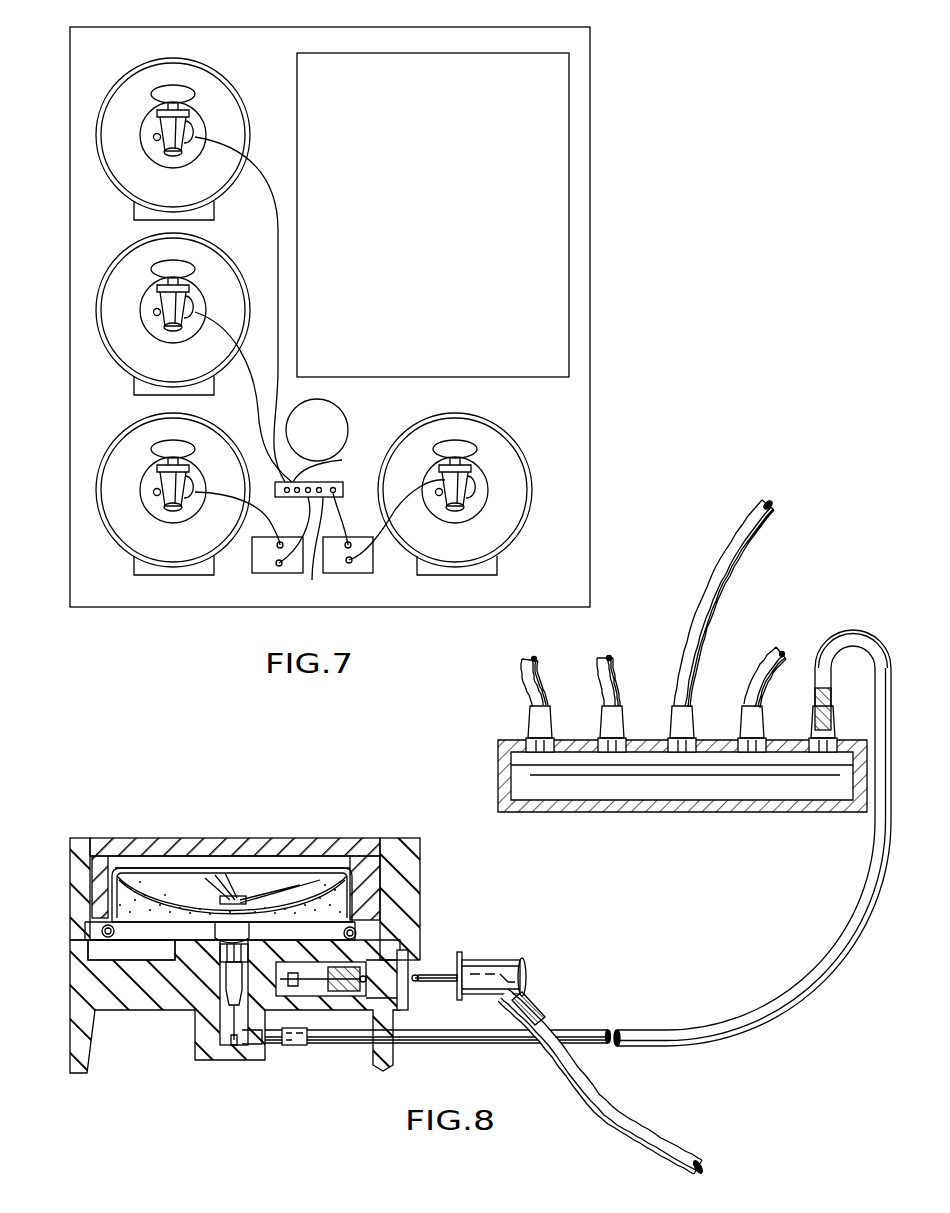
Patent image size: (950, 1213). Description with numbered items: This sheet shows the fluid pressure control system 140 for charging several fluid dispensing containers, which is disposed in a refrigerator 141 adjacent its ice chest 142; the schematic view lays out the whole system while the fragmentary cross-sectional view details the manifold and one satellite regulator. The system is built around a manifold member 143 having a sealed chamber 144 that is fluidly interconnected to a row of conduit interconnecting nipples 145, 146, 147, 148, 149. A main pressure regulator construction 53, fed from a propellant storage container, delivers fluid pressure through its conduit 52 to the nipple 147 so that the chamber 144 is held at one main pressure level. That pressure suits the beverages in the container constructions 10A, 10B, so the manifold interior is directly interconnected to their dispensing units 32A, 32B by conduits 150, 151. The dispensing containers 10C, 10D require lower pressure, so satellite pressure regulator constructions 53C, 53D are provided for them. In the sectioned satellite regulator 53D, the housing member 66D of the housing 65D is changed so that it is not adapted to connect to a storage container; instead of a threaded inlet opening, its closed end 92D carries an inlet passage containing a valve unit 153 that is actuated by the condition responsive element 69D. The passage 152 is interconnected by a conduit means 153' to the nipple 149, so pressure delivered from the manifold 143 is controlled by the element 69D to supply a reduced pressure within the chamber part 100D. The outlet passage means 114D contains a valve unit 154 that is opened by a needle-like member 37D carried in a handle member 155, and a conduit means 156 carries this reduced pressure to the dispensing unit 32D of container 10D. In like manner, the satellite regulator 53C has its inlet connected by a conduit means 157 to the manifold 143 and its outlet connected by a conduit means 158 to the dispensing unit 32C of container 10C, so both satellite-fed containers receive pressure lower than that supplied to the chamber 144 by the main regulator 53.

In FIG. 7, the container construction 10A is at (154, 128).
In FIG. 7, the container construction 10B is at (134, 314).
In FIG. 7, the dispensing container 10C is at (136, 527).
In FIG. 7, the dispensing container 10D is at (481, 506).
In FIG. 7, the dispensing unit 32A is at (141, 129).
In FIG. 7, the dispensing unit 32B is at (139, 318).
In FIG. 7, the dispensing unit 32C is at (141, 498).
In FIG. 7, the dispensing unit 32D is at (483, 475).
In FIG. 8, the needle-like member 37D is at (435, 973).
In FIG. 7, the conduit 52 is at (343, 460).
In FIG. 8, the conduit 52 is at (736, 566).
In FIG. 7, the main pressure regulator construction 53 is at (329, 422).
In FIG. 7, the satellite pressure regulator construction 53C is at (266, 579).
In FIG. 7, the satellite pressure regulator construction 53D is at (369, 577).
In FIG. 8, the satellite pressure regulator construction 53D is at (348, 830).
In FIG. 8, the housing 65D is at (409, 884).
In FIG. 8, the housing member 66D is at (410, 905).
In FIG. 8, the condition responsive element 69D is at (272, 880).
In FIG. 8, the closed end 92D is at (157, 990).
In FIG. 8, the chamber part 100D is at (142, 936).
In FIG. 8, the outlet passage means 114D is at (385, 945).
In FIG. 7, the control system 140 is at (393, 317).
In FIG. 8, the control system 140 is at (781, 1049).
In FIG. 7, the refrigerator 141 is at (592, 476).
In FIG. 7, the ice chest 142 is at (570, 352).
In FIG. 7, the manifold member 143 is at (326, 476).
In FIG. 8, the manifold member 143 is at (682, 802).
In FIG. 8, the sealed chamber 144 is at (662, 790).
In FIG. 8, the conduit interconnecting nipple 145 is at (532, 740).
In FIG. 8, the conduit interconnecting nipple 146 is at (613, 740).
In FIG. 7, the conduit interconnecting nipple 147 is at (312, 499).
In FIG. 8, the conduit interconnecting nipple 147 is at (736, 625).
In FIG. 8, the conduit interconnecting nipple 148 is at (768, 675).
In FIG. 8, the conduit interconnecting nipple 149 is at (829, 740).
In FIG. 7, the conduit 150 is at (279, 300).
In FIG. 7, the conduit 151 is at (258, 399).
In FIG. 8, the conduit 151 is at (251, 1045).
In FIG. 8, the passage 152 is at (234, 1050).
In FIG. 8, the valve unit 153 is at (253, 1021).
In FIG. 7, the conduit means 153' is at (380, 500).
In FIG. 8, the conduit means 153' is at (438, 1065).
In FIG. 8, the valve unit 154 is at (372, 1002).
In FIG. 8, the handle member 155 is at (506, 967).
In FIG. 7, the conduit means 156 is at (395, 511).
In FIG. 8, the conduit means 156 is at (623, 1111).
In FIG. 7, the conduit means 157 is at (332, 550).
In FIG. 8, the conduit means 157 is at (769, 652).
In FIG. 7, the conduit means 158 is at (236, 548).